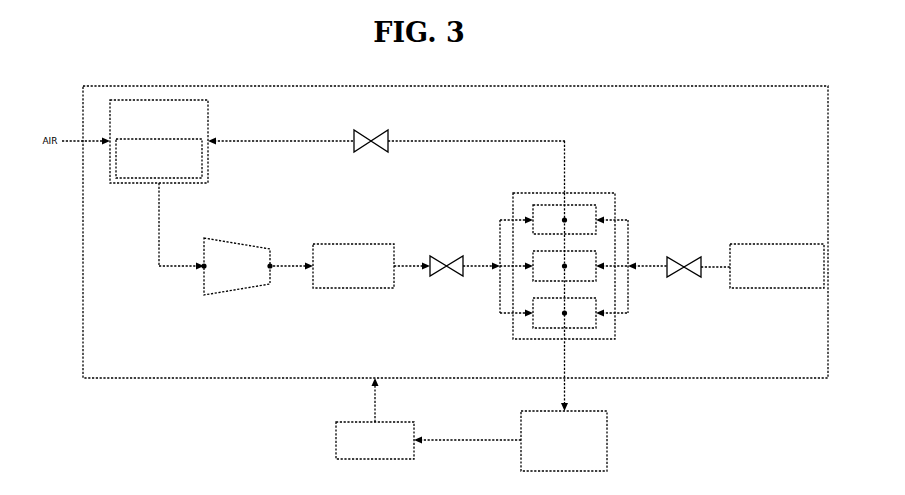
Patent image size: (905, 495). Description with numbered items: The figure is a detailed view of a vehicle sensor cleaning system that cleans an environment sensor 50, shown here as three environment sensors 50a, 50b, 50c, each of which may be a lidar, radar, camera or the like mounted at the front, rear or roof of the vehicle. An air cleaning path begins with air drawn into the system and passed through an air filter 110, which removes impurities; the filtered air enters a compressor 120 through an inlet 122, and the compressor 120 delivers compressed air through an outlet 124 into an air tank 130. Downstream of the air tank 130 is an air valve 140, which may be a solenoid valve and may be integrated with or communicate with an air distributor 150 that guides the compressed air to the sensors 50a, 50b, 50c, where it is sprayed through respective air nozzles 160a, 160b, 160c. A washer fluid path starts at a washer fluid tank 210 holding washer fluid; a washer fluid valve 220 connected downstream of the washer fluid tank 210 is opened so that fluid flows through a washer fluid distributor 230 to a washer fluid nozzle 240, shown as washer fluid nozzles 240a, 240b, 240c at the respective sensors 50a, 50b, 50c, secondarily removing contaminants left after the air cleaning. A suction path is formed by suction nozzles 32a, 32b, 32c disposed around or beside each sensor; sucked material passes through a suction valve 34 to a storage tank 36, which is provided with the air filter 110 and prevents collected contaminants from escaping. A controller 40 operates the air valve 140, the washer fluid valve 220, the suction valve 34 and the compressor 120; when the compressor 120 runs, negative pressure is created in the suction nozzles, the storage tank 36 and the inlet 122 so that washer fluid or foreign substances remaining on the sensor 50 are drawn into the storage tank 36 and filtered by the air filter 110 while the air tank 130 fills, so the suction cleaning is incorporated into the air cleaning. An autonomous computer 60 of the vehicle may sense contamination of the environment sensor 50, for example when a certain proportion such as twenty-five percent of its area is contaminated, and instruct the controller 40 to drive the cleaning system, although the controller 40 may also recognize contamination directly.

The storage tank 36 is at (208, 112).
The air filter 110 is at (202, 159).
The suction valve 34 is at (371, 130).
The compressor 120 is at (237, 291).
The inlet 122 is at (201, 270).
The outlet 124 is at (273, 270).
The air tank 130 is at (353, 244).
The air valve 140 is at (440, 256).
The air distributor 150 is at (500, 305).
The environment sensor 50 is at (588, 339).
The environment sensor 50a is at (615, 193).
The environment sensor 50b is at (596, 277).
The environment sensor 50c is at (596, 328).
The suction nozzle 32a is at (562, 216).
The suction nozzle 32b is at (561, 268).
The suction nozzle 32c is at (562, 316).
The air nozzle 160a is at (528, 216).
The air nozzle 160b is at (528, 262).
The air nozzle 160c is at (528, 317).
The washer fluid distributor 230 is at (628, 220).
The washer fluid nozzle 240 is at (612, 267).
The washer fluid nozzle 240a is at (604, 220).
The washer fluid nozzle 240b is at (604, 266).
The washer fluid nozzle 240c is at (604, 313).
The washer fluid valve 220 is at (690, 257).
The washer fluid tank 210 is at (777, 244).
The controller 40 is at (336, 440).
The autonomous computer 60 is at (607, 440).